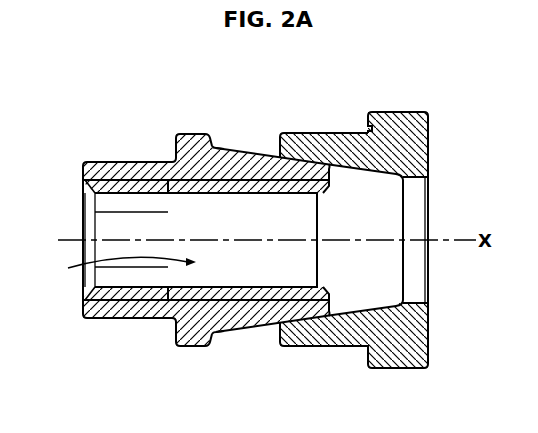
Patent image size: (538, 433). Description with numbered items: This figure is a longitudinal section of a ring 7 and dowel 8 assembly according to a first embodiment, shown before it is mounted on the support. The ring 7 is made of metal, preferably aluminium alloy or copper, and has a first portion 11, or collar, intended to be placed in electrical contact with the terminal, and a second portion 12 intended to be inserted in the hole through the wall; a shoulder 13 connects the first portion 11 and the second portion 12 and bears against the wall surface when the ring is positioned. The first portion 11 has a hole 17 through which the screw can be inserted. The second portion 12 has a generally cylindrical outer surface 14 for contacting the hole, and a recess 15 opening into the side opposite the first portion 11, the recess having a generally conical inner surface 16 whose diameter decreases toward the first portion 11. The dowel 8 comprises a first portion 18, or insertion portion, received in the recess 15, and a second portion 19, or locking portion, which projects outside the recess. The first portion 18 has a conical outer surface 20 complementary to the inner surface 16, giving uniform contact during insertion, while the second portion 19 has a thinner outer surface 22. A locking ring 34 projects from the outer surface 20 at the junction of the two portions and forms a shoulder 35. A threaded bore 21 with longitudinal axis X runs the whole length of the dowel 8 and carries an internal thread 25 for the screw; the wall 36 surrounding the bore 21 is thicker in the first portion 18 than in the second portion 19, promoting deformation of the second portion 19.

The ring 7 is at (419, 144).
The dowel 8 is at (102, 155).
The first portion 11 is at (400, 122).
The second portion 12 is at (333, 140).
The shoulder 13 is at (366, 123).
The outer surface 14 is at (323, 344).
The recess 15 is at (367, 207).
The inner surface 16 is at (372, 313).
The hole 17 is at (421, 265).
The first portion 18 is at (250, 167).
The second portion 19 is at (138, 170).
The outer surface 20 is at (243, 320).
The threaded bore 21 is at (114, 255).
The outer surface 22 is at (118, 319).
The internal thread 25 is at (197, 290).
The locking ring 34 is at (199, 143).
The shoulder 35 is at (213, 141).
The wall 36 is at (233, 313).